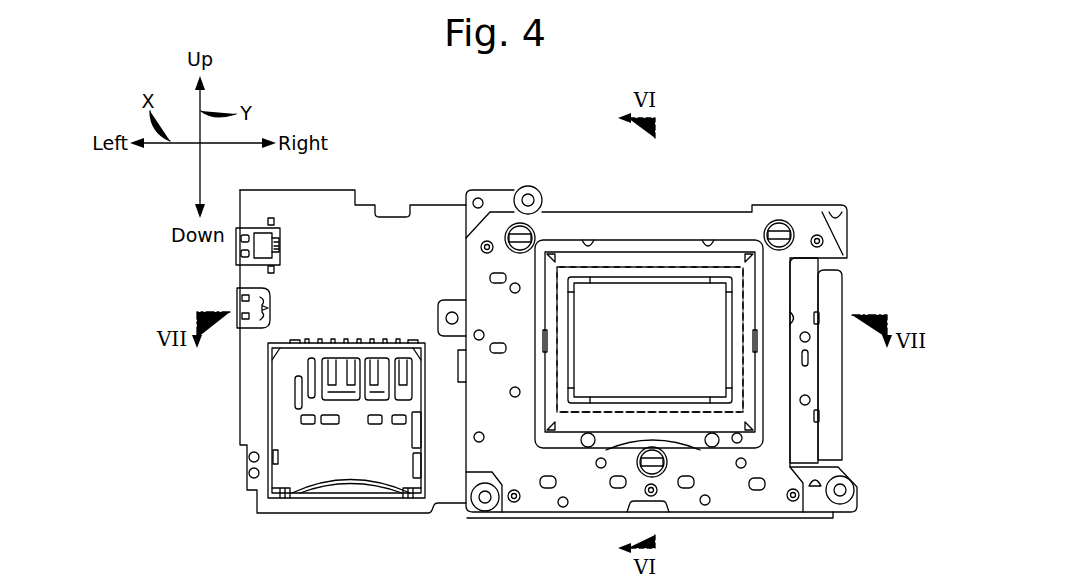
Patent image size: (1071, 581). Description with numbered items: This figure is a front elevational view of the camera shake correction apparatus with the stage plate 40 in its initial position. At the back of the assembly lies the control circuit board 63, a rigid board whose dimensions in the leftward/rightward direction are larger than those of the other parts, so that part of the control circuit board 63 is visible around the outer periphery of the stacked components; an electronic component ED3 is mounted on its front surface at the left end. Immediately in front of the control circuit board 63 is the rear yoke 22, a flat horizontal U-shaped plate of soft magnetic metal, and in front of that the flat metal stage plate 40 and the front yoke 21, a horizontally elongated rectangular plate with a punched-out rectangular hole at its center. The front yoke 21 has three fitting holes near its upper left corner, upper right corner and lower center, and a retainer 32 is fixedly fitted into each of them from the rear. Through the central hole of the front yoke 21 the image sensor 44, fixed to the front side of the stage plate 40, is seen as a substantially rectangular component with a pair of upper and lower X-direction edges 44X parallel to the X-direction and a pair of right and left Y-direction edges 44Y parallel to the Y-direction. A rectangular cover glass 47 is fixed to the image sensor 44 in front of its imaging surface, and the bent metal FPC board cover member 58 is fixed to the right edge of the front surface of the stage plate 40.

The front yoke 21 is at (738, 216).
The rear yoke 22 is at (490, 196).
The retainer 32 is at (513, 226).
The stage plate 40 is at (805, 296).
The image sensor 44 is at (638, 310).
The X-direction edges 44X is at (597, 268).
The Y-direction edges 44Y is at (744, 381).
The cover glass 47 is at (683, 298).
The FPC board cover member 58 is at (833, 302).
The control circuit board 63 is at (394, 228).
The electronic component ED3 is at (357, 350).